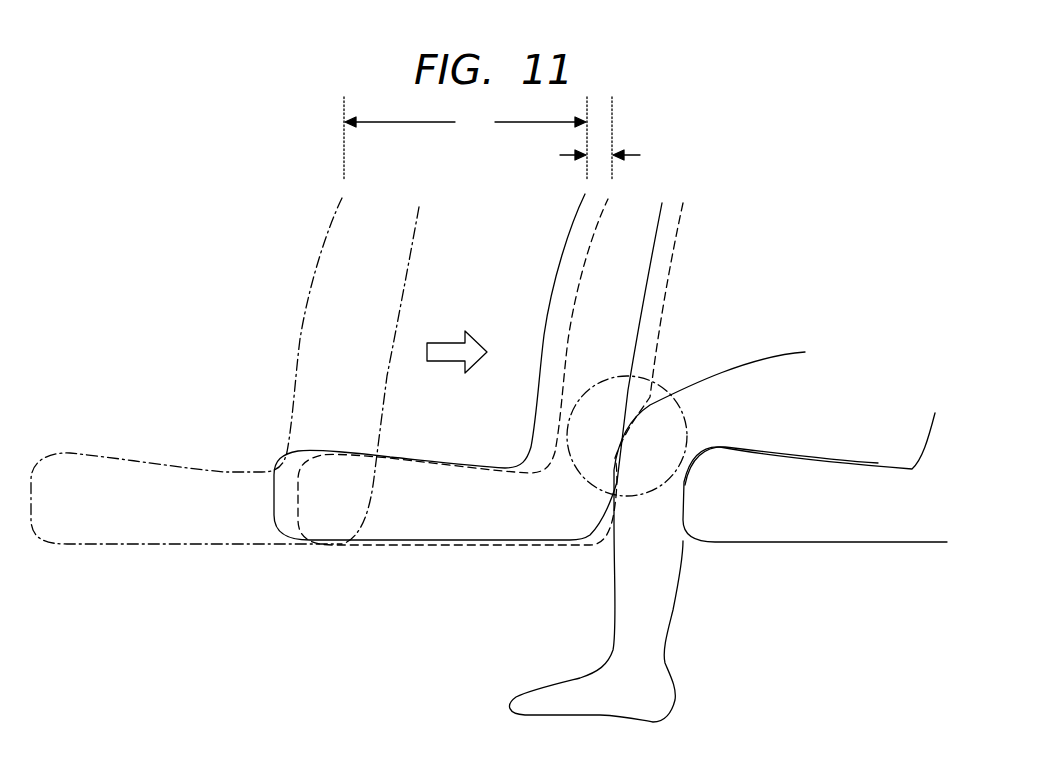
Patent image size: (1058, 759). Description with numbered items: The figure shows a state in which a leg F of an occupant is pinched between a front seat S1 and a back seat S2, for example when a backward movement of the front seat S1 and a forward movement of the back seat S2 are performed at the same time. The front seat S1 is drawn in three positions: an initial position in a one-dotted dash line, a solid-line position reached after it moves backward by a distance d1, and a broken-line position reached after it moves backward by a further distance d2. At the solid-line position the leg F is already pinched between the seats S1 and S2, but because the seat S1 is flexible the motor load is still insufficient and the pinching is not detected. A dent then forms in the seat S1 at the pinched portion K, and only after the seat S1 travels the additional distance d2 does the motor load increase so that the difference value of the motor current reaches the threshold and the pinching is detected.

The front seat S1 is at (312, 275).
The back seat S2 is at (894, 543).
The pinched portion K is at (687, 422).
The leg of an occupant F is at (615, 603).
The distance d1 is at (465, 138).
The distance d2 is at (614, 138).